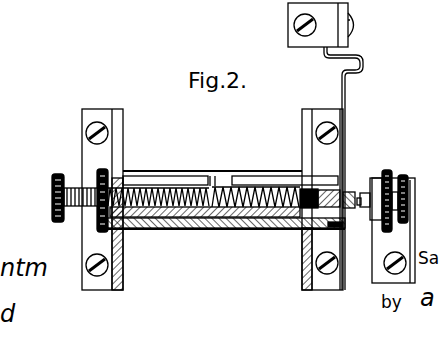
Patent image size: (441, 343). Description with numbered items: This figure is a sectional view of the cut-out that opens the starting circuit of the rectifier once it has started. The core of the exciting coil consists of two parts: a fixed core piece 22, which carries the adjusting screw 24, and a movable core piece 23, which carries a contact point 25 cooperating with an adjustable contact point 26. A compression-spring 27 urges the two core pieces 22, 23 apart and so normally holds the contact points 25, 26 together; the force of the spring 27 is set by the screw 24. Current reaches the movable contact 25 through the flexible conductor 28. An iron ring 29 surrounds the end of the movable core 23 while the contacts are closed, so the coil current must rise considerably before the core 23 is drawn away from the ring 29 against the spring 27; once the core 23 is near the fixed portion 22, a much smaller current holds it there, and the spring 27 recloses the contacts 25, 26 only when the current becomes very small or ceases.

The fixed core piece 22 is at (107, 223).
The movable core piece 23 is at (275, 220).
The adjusting screw 24 is at (52, 202).
The contact point 25 is at (348, 193).
The adjustable contact point 26 is at (355, 196).
The compression-spring 27 is at (187, 222).
The flexible conductor 28 is at (345, 93).
The iron ring 29 is at (333, 228).